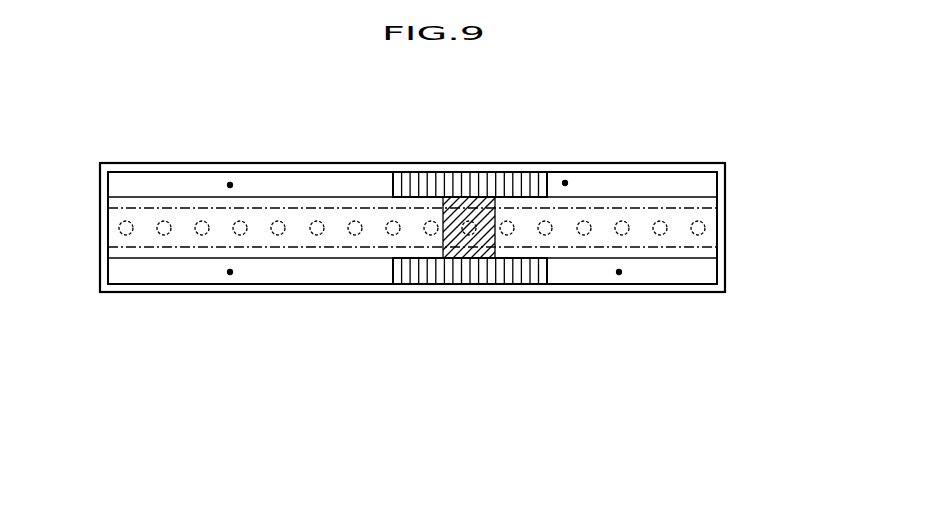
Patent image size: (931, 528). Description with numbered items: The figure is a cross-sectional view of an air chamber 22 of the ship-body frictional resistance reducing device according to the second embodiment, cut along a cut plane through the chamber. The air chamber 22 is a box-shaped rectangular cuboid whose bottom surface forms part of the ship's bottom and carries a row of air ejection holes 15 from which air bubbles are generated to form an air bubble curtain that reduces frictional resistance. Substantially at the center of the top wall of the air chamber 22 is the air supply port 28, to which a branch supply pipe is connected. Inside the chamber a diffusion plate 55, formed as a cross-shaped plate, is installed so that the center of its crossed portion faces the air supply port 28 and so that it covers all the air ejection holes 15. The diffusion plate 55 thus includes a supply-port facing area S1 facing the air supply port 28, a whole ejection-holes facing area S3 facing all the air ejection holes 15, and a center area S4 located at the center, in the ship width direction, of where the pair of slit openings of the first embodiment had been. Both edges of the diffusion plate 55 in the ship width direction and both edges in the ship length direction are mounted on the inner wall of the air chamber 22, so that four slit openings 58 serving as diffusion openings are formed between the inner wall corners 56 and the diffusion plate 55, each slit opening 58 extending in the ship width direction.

The air chamber 22 is at (730, 170).
The inner wall corners 56 is at (112, 176).
The diffusion plate 55 is at (157, 200).
The slit openings 58 is at (619, 272).
The air ejection holes 15 is at (203, 233).
The air supply port 28 is at (491, 258).
The supply-port facing area S1 is at (500, 256).
The whole ejection-holes facing area S3 is at (707, 222).
The center area S4 is at (398, 190).